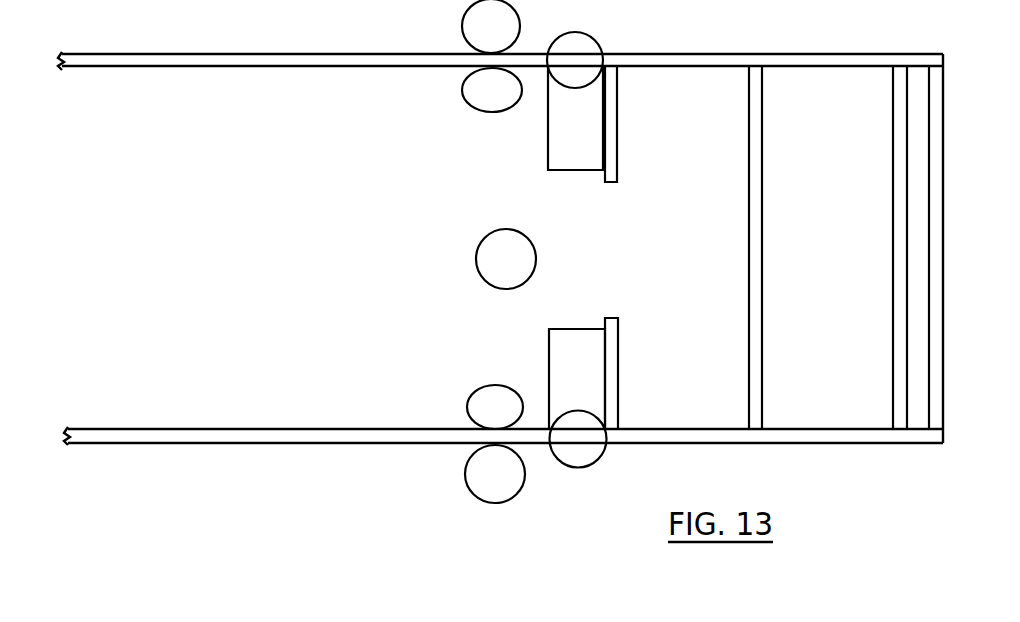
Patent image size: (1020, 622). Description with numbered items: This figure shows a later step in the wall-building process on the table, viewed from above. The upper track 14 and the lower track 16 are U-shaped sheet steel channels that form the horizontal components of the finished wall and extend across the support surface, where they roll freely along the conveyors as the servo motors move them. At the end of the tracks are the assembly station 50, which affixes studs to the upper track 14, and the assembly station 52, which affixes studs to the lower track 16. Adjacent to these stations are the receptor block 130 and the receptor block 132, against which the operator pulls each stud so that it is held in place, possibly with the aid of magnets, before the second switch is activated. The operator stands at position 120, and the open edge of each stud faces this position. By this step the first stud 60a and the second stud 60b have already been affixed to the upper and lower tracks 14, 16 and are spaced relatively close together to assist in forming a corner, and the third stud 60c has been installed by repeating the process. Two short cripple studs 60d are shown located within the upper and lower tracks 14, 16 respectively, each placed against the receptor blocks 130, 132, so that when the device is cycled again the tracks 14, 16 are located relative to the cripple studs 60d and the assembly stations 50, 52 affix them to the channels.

The upper track 14 is at (159, 54).
The lower track 16 is at (185, 429).
The assembly station 50 is at (591, 44).
The assembly station 52 is at (588, 460).
The first stud 60a is at (930, 322).
The second stud 60b is at (893, 165).
The third stud 60c is at (750, 198).
The cripple stud 60d is at (613, 122).
The operator position 120 is at (480, 255).
The receptor block 130 is at (557, 127).
The receptor block 132 is at (553, 352).